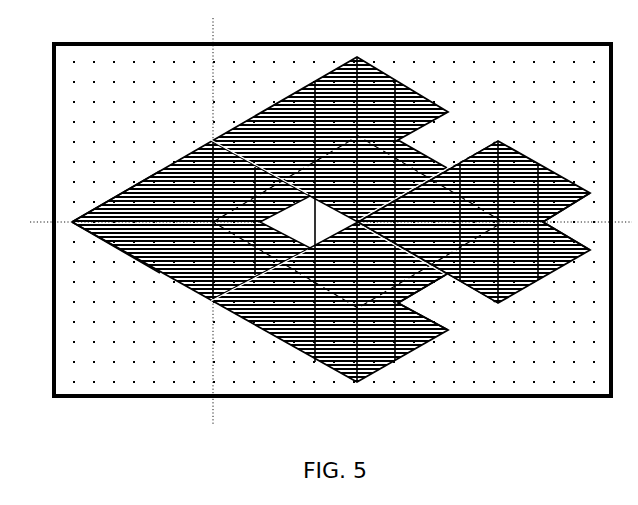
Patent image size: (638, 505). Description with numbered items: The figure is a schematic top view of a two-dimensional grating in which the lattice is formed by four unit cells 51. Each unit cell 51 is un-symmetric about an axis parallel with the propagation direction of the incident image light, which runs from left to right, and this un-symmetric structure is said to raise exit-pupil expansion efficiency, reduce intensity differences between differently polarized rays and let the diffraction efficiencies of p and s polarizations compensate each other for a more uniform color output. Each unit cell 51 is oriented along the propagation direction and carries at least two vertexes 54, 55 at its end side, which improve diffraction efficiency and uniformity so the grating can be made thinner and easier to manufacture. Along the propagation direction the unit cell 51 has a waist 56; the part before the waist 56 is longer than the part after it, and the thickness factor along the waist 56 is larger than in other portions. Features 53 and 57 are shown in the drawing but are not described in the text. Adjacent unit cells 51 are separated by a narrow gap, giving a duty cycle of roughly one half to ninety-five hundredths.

The unit cell 51 is at (280, 104).
The first plate corner edge 53 is at (76, 219).
The vertex 54 is at (590, 192).
The vertex 55 is at (455, 276).
The waist 56 is at (213, 142).
The notch of second plate 57 is at (588, 253).